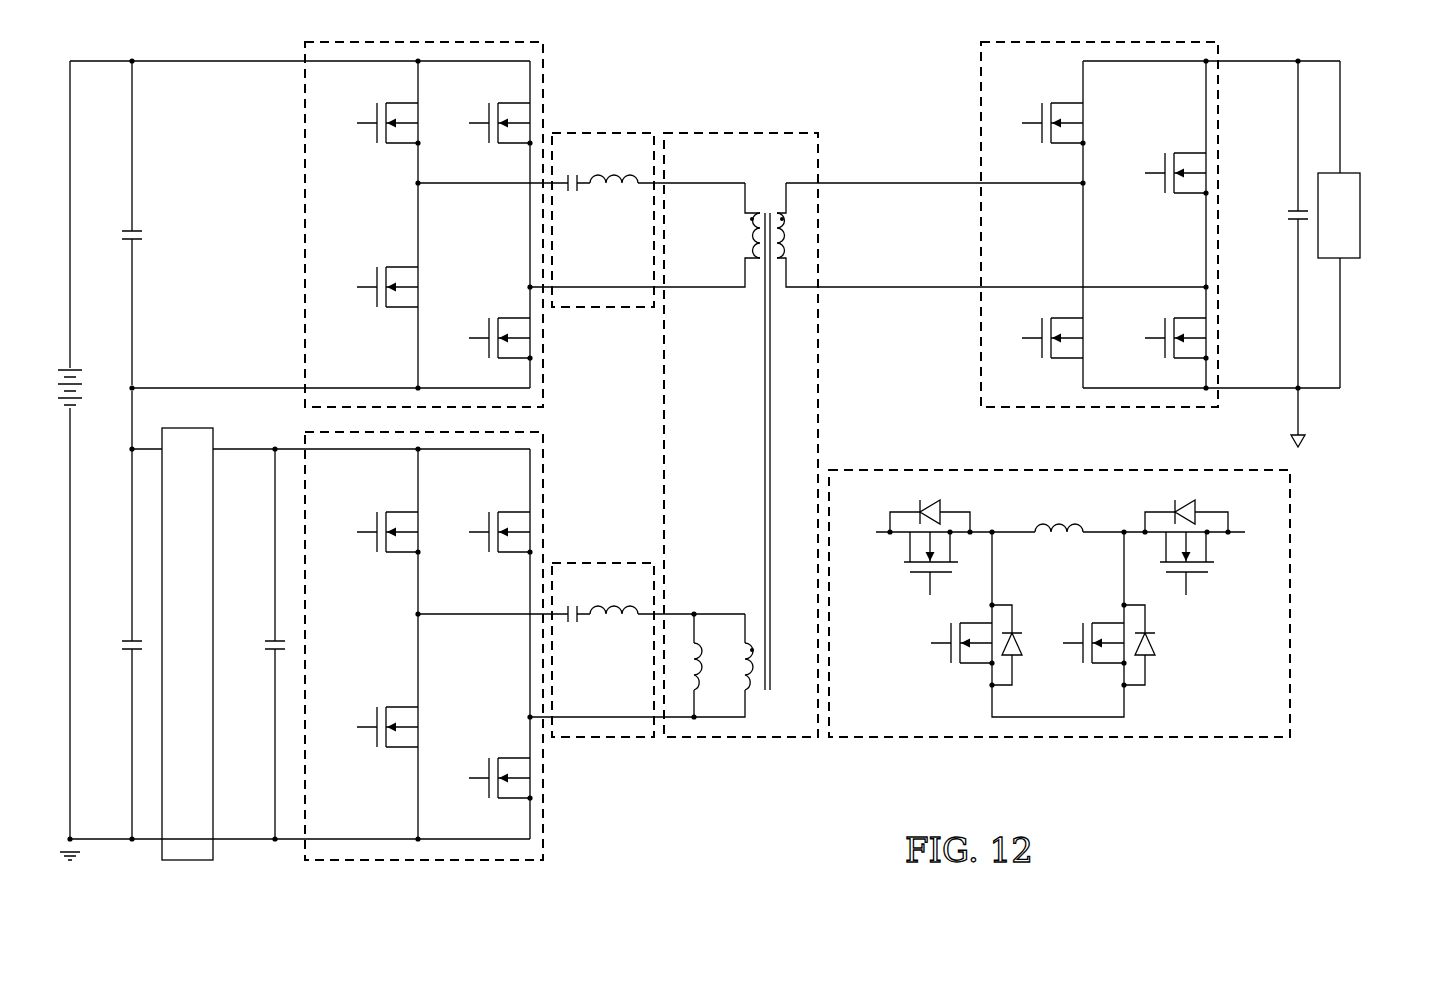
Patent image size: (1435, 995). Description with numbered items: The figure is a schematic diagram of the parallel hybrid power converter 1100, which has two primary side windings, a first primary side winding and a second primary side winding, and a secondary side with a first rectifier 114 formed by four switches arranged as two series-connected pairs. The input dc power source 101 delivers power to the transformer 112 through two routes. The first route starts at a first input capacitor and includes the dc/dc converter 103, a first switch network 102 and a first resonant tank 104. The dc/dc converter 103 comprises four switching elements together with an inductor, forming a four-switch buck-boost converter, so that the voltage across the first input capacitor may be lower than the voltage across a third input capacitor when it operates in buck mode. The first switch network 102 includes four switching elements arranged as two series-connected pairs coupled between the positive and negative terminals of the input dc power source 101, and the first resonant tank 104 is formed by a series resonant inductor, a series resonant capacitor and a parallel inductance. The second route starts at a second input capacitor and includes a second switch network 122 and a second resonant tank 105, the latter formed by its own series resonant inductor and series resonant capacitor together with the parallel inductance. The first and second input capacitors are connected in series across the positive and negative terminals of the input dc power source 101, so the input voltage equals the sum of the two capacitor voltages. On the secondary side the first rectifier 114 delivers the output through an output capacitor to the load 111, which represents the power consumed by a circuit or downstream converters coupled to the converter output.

The input dc power source 101 is at (88, 386).
The first switch network 102 is at (546, 780).
The dc/dc converter 103 is at (960, 470).
The first resonant tank 104 is at (601, 562).
The second resonant tank 105 is at (603, 132).
The load 111 is at (1362, 243).
The transformer 112 is at (716, 132).
The first rectifier 114 is at (980, 90).
The second switch network 122 is at (304, 209).
The parallel hybrid power converter 1100 is at (745, 452).